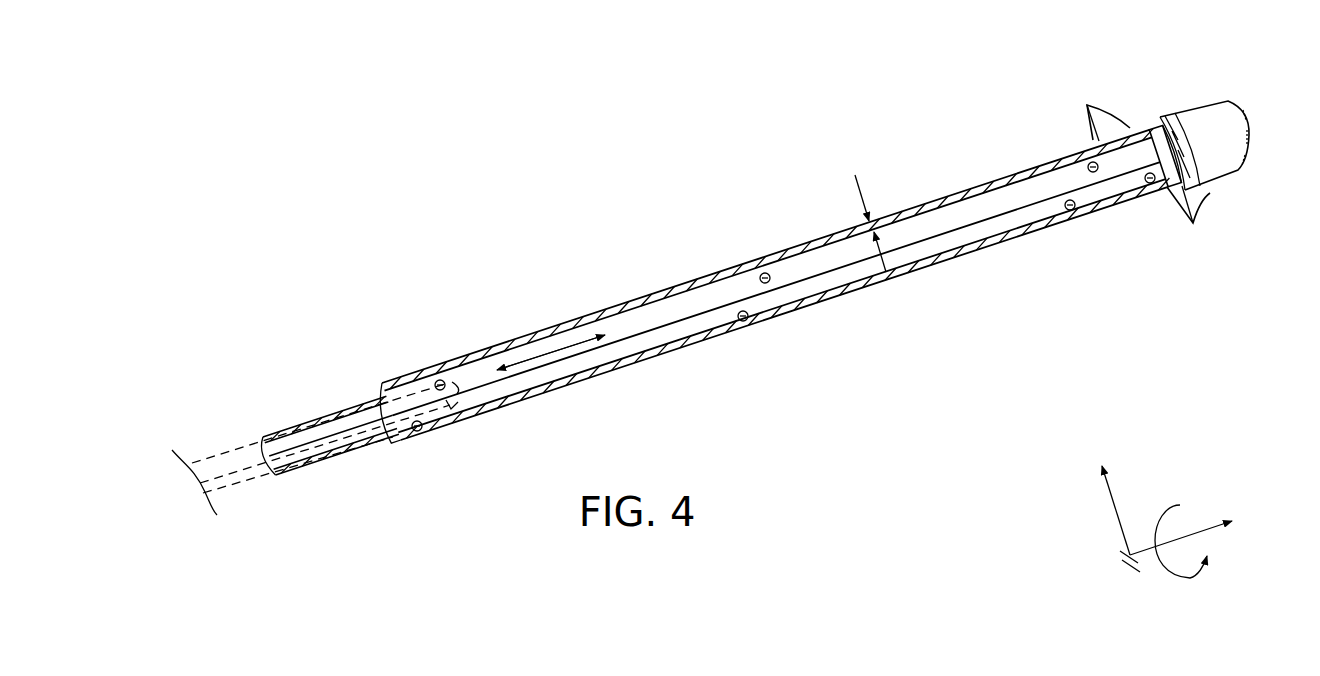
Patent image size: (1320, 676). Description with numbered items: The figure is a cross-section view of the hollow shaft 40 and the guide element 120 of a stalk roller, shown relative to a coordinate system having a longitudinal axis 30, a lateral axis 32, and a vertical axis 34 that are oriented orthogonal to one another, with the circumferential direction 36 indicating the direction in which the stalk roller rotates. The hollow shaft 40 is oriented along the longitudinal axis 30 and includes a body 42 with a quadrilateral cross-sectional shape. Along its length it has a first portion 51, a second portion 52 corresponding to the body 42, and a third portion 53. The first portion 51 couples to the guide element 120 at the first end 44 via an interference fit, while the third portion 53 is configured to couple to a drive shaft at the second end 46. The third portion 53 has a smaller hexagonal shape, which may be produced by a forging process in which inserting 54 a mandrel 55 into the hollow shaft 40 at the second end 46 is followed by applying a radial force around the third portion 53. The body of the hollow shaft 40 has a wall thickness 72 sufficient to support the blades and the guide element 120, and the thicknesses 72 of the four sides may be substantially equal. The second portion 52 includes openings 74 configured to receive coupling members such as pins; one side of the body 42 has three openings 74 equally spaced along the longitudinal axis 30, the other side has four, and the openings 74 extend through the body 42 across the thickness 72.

The longitudinal axis 30 is at (1217, 525).
The lateral axis 32 is at (1128, 568).
The vertical axis 34 is at (1111, 503).
The circumferential direction 36 is at (1160, 508).
The hollow shaft 40 is at (552, 200).
The body 42 is at (537, 334).
The first end 44 is at (1168, 184).
The second end 46 is at (262, 458).
The first portion 51 is at (1121, 118).
The second portion 52 is at (662, 296).
The third portion 53 is at (323, 413).
The inserting 54 is at (550, 352).
The mandrel 55 is at (457, 392).
The wall thickness 72 is at (863, 190).
The openings 74 is at (437, 381).
The guide element 120 is at (1187, 102).